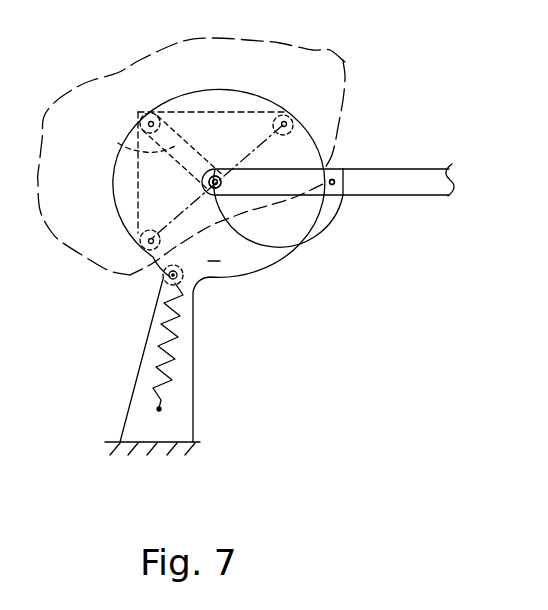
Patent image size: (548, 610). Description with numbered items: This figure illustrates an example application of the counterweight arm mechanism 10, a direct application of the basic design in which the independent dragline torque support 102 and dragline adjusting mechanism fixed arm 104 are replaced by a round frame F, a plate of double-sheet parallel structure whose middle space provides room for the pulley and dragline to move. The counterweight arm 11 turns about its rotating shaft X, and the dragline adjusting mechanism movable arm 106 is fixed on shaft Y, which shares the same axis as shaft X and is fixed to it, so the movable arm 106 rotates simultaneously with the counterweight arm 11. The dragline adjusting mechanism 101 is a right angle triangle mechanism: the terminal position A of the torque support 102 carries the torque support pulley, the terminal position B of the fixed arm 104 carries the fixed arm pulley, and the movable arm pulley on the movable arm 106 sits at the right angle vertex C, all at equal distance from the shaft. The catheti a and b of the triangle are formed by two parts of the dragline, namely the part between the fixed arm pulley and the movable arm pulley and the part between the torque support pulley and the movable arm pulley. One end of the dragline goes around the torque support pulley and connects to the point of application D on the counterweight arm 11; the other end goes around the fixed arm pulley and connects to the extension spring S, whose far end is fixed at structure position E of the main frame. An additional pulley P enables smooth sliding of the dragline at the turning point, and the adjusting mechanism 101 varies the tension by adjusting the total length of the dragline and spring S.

The counterweight arm mechanism 10 is at (260, 313).
The counterweight arm 11 is at (362, 162).
The dragline adjusting mechanism 101 is at (347, 63).
The dragline torque support 102 is at (255, 137).
The dragline adjusting mechanism fixed arm 104 is at (172, 213).
The dragline adjusting mechanism movable arm 106 is at (118, 143).
The cathetus a is at (137, 180).
The cathetus b is at (215, 112).
The terminal position of the dragline torque support A is at (229, 169).
The terminal position of the dragline adjusting mechanism fixed arm B is at (140, 246).
The right angle vertex C is at (141, 115).
The point of application D is at (332, 198).
The additional pulley P is at (165, 280).
The extension spring S is at (157, 368).
The structure position E is at (157, 407).
The rotating shaft of the counterweight arm X is at (222, 200).